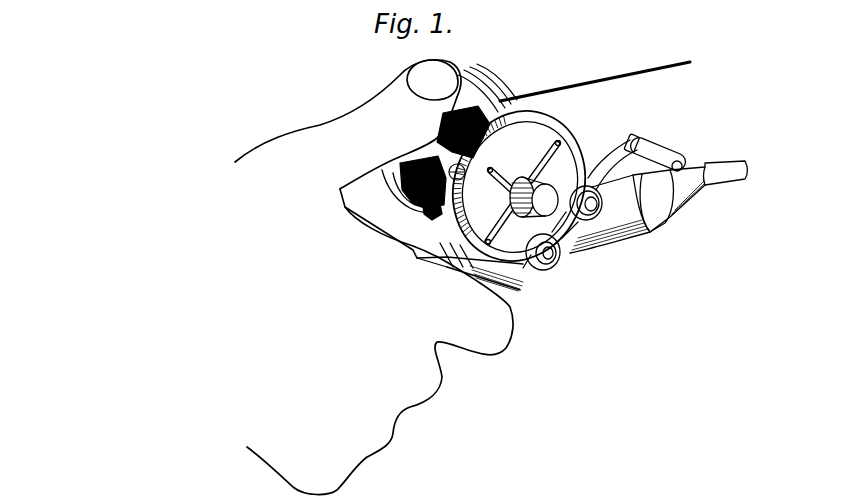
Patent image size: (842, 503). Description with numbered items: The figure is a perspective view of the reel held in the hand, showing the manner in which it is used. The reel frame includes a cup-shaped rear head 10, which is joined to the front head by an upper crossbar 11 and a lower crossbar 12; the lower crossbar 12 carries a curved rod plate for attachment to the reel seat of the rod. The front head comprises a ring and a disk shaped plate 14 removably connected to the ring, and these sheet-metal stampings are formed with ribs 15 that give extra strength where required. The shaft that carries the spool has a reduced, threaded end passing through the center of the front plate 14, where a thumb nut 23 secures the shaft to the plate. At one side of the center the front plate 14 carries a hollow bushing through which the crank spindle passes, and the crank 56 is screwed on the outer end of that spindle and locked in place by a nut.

The rear head 10 is at (385, 184).
The upper crossbar 11 is at (517, 107).
The lower crossbar 12 is at (433, 213).
The disk shaped plate 14 is at (575, 157).
The ribs 15 is at (556, 153).
The thumb nut 23 is at (543, 205).
The crank 56 is at (607, 163).